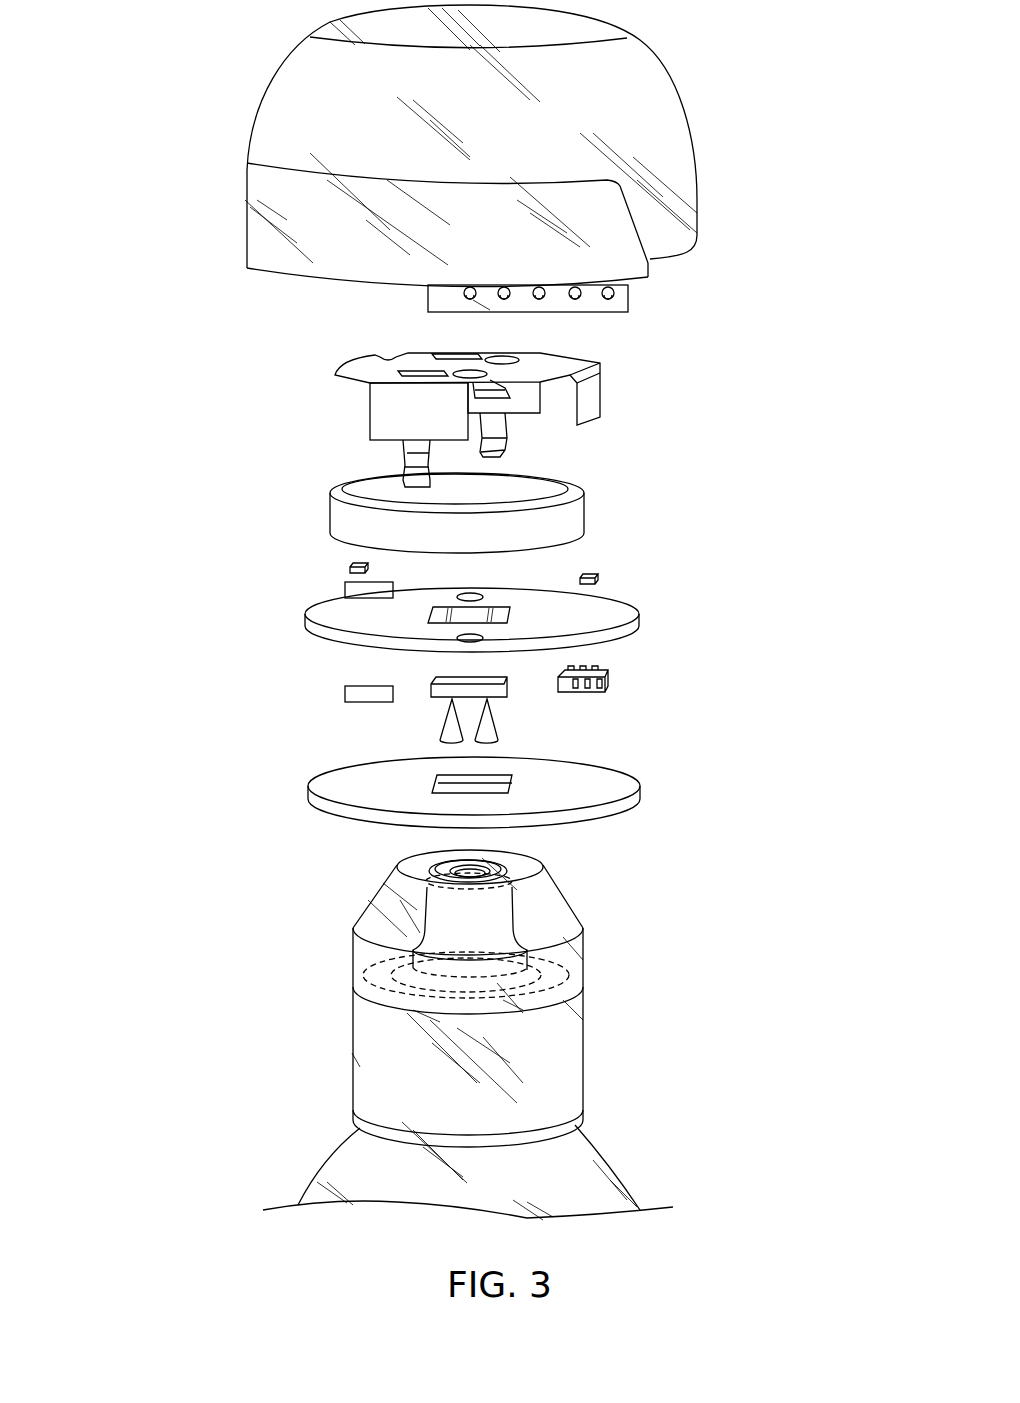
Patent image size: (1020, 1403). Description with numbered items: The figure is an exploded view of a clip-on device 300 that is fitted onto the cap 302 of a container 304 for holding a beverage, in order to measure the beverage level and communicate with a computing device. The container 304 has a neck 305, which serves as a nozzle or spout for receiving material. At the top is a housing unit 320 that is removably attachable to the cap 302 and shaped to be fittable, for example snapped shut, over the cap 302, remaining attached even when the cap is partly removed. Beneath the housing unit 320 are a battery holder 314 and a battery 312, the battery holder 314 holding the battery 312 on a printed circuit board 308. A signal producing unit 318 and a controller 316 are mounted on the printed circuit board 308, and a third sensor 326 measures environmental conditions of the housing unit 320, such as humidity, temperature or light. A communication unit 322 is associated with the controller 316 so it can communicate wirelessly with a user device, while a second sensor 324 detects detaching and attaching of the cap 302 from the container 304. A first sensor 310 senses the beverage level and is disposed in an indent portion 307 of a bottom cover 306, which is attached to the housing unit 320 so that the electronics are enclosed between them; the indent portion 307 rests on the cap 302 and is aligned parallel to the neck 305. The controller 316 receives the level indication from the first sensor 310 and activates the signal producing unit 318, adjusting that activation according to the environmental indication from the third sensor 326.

The device 300 is at (220, 446).
The housing unit 320 is at (678, 140).
The battery holder 314 is at (593, 390).
The battery 312 is at (584, 513).
The signal producing unit 318 is at (348, 567).
The third sensor 326 is at (345, 588).
The printed circuit board 308 is at (640, 620).
The communication unit 322 is at (344, 692).
The second sensor 324 is at (440, 730).
The first sensor 310 is at (500, 728).
The controller 316 is at (607, 682).
The indent portion 307 is at (500, 780).
The bottom cover 306 is at (640, 788).
The cap 302 is at (563, 890).
The neck 305 is at (500, 920).
The container 304 is at (603, 1175).